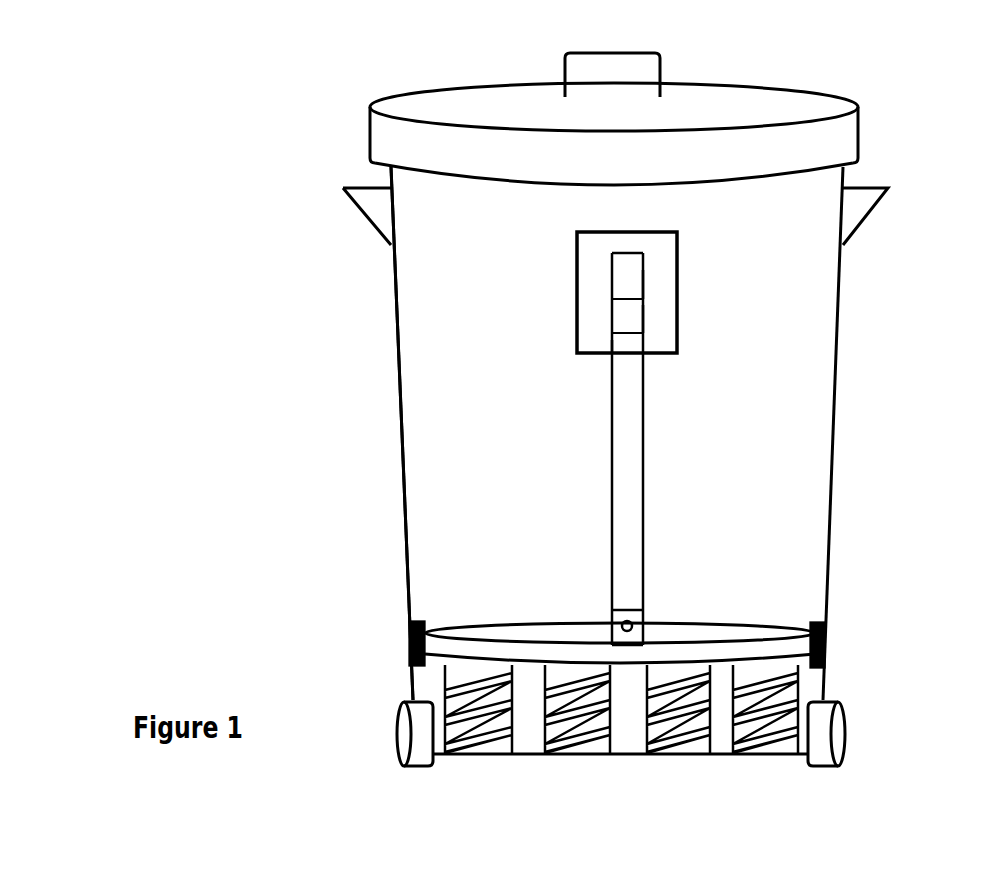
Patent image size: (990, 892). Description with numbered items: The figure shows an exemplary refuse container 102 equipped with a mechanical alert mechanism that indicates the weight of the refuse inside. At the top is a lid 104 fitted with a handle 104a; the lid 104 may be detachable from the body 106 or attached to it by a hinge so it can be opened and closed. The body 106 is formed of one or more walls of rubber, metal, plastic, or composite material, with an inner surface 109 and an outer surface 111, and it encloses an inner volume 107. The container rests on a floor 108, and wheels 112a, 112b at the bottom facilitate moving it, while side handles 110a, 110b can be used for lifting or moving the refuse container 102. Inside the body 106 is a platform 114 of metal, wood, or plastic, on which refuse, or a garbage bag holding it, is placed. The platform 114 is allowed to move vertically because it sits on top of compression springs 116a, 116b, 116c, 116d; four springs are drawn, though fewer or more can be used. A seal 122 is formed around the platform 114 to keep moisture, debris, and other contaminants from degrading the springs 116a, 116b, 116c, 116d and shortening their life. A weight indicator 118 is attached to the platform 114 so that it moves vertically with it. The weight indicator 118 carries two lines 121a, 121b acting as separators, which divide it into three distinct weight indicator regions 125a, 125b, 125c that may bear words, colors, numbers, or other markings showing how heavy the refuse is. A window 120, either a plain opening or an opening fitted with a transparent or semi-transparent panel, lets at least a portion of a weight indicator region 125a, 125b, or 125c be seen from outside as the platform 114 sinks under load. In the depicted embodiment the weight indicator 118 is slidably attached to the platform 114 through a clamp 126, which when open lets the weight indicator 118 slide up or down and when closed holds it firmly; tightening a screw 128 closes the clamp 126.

The refuse container 102 is at (912, 78).
The lid 104 is at (768, 97).
The handle 104a is at (650, 55).
The body 106 is at (845, 342).
The inner volume 107 is at (805, 432).
The floor 108 is at (805, 758).
The inner surface 109 is at (395, 285).
The handle 110a is at (880, 188).
The handle 110b is at (345, 187).
The outer surface 111 is at (389, 285).
The wheel 112a is at (398, 700).
The wheel 112b is at (845, 698).
The platform 114 is at (690, 628).
The spring 116a is at (478, 757).
The spring 116b is at (580, 757).
The spring 116c is at (680, 757).
The spring 116d is at (765, 757).
The weight indicator 118 is at (645, 550).
The window 120 is at (655, 353).
The line separator 121a is at (644, 290).
The line separator 121b is at (644, 328).
The seal 122 is at (397, 632).
The weight indicator region 125a is at (610, 270).
The weight indicator region 125b is at (610, 305).
The weight indicator region 125c is at (610, 338).
The clamp 126 is at (634, 610).
The screw 128 is at (616, 616).